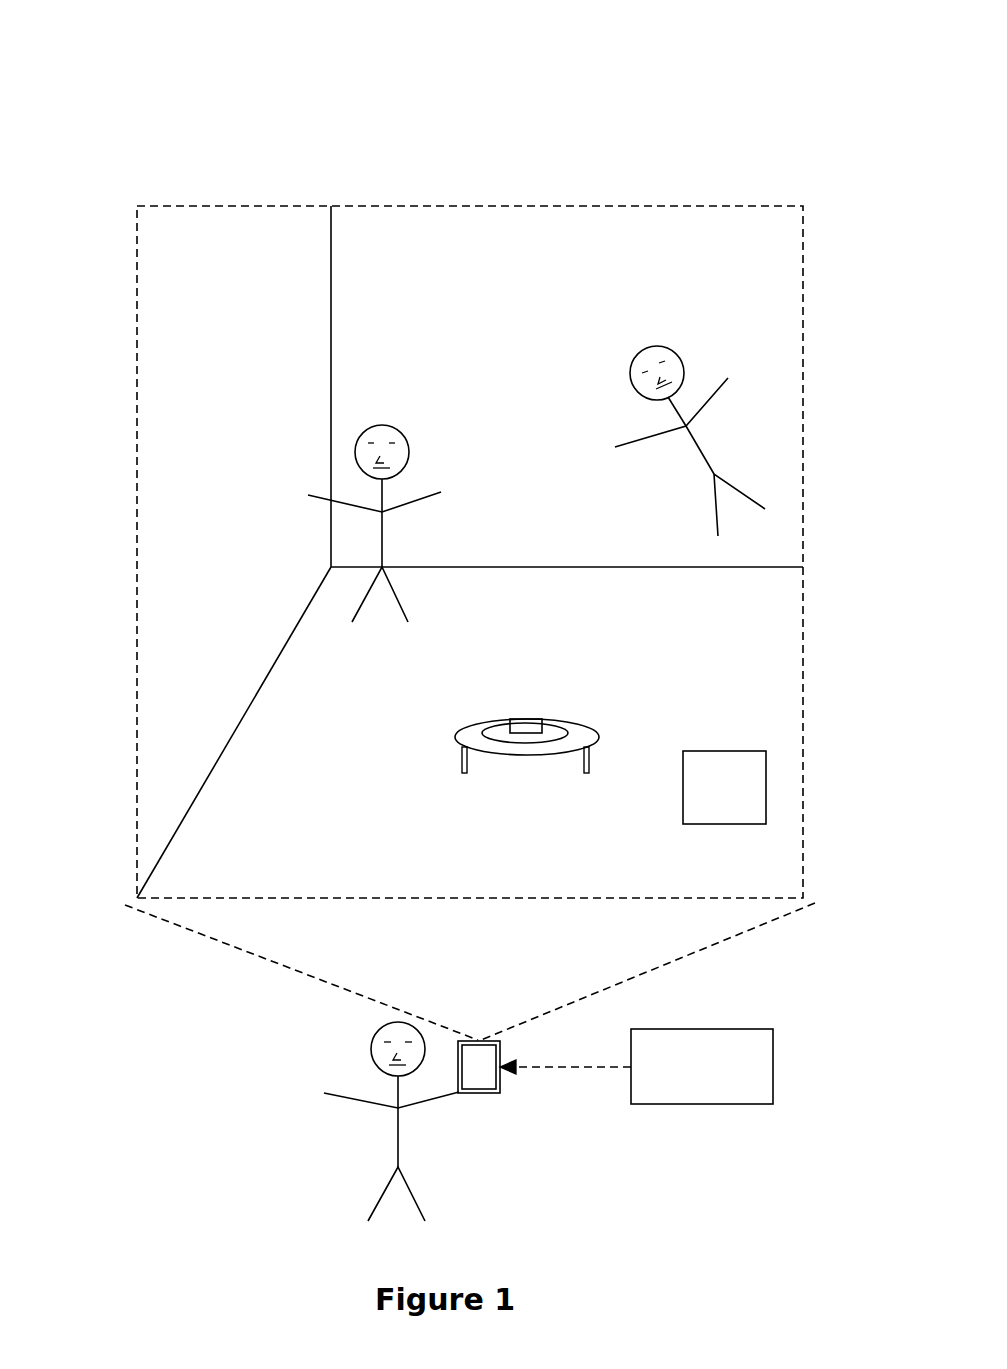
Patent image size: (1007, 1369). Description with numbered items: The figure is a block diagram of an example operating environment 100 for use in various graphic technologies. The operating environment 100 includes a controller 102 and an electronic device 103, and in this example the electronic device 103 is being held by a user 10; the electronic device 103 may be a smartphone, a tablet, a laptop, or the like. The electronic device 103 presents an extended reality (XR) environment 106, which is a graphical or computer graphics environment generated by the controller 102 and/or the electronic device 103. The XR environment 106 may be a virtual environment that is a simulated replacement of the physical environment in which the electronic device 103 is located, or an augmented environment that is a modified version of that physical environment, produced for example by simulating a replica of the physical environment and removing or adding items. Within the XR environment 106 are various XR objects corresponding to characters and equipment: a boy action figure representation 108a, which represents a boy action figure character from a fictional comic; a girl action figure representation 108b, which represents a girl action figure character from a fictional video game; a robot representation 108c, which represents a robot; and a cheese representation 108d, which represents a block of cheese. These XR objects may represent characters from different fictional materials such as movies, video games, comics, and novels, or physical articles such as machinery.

The operating environment 100 is at (92, 46).
The extended reality (XR) environment 106 is at (470, 552).
The boy action figure representation 108a is at (382, 536).
The girl action figure representation 108b is at (743, 494).
The robot representation 108c is at (767, 780).
The cheese representation 108d is at (515, 722).
The electronic device 103 is at (500, 1056).
The controller 102 is at (636, 1066).
The user 10 is at (379, 1204).